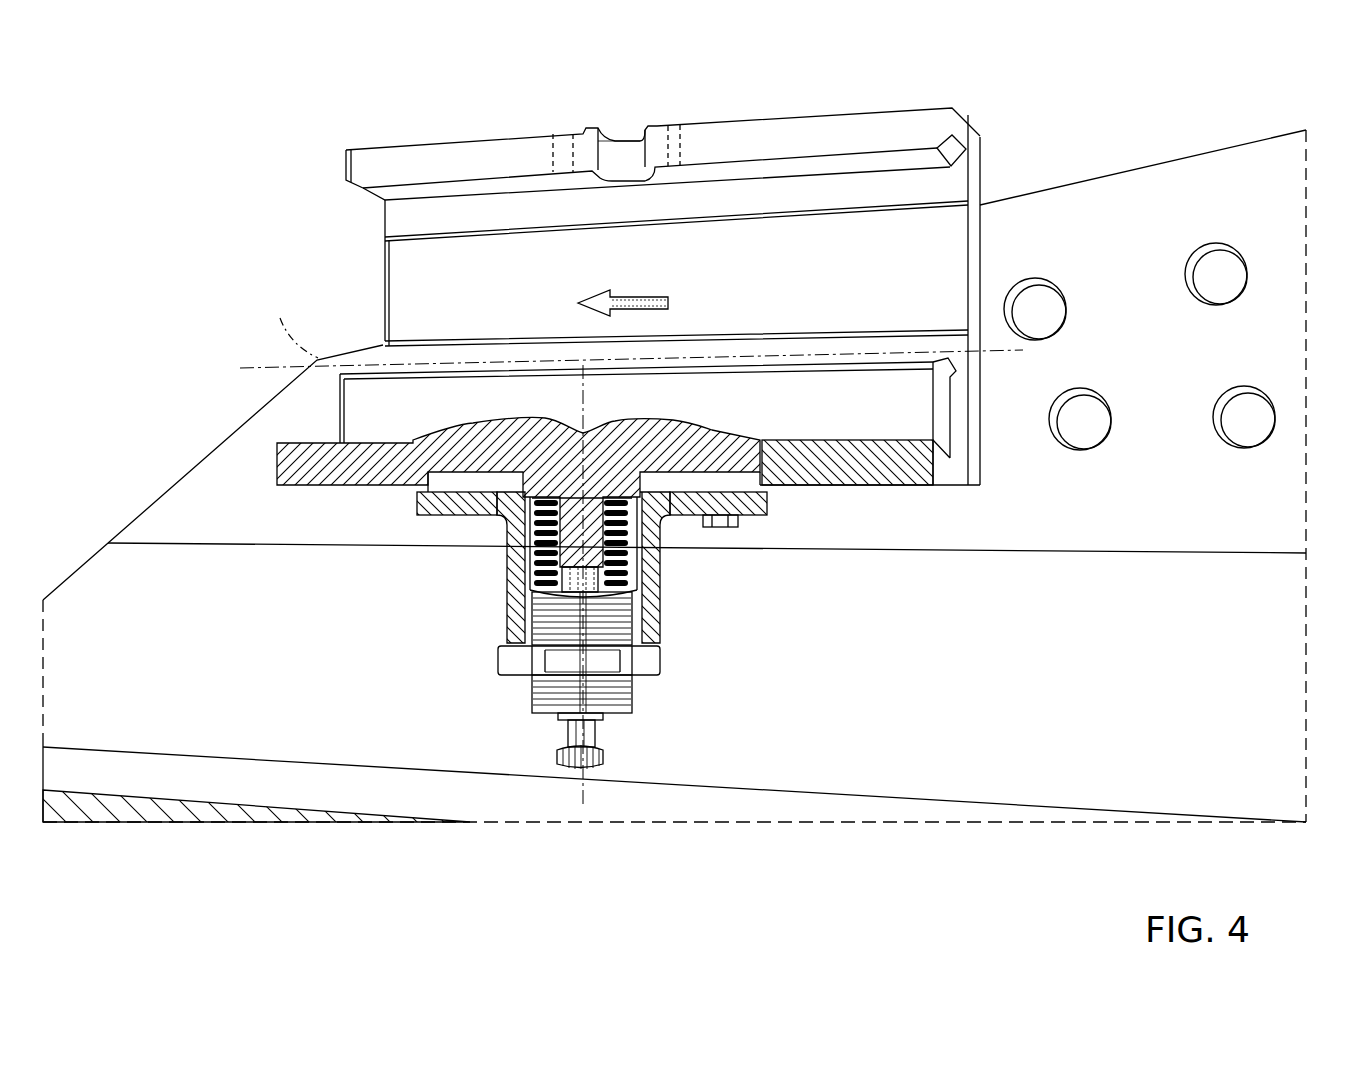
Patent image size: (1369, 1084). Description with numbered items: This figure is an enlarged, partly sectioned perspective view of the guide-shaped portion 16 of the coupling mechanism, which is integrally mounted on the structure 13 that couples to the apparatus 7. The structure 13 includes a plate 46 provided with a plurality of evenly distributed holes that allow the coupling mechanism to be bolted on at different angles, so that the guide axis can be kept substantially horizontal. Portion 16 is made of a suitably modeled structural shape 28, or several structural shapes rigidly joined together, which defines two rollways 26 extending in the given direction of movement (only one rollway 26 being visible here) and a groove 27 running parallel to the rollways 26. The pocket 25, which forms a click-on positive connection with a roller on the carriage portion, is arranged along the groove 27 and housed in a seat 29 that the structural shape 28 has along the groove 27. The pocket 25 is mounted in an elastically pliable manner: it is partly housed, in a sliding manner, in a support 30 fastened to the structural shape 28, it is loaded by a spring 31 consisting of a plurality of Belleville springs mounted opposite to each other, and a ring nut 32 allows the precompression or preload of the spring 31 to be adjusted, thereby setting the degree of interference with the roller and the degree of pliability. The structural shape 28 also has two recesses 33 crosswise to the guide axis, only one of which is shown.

The apparatus 7 is at (322, 848).
The structure 13 is at (1225, 175).
The portion 16 is at (262, 338).
The pocket 25 is at (705, 425).
The rollway 26 is at (912, 259).
The groove 27 is at (866, 411).
The structural shape 28 is at (890, 135).
The seat 29 is at (728, 486).
The support 30 is at (521, 622).
The spring 31 is at (548, 548).
The ring nut 32 is at (620, 688).
The recess 33 is at (623, 147).
The plate 46 is at (1250, 498).